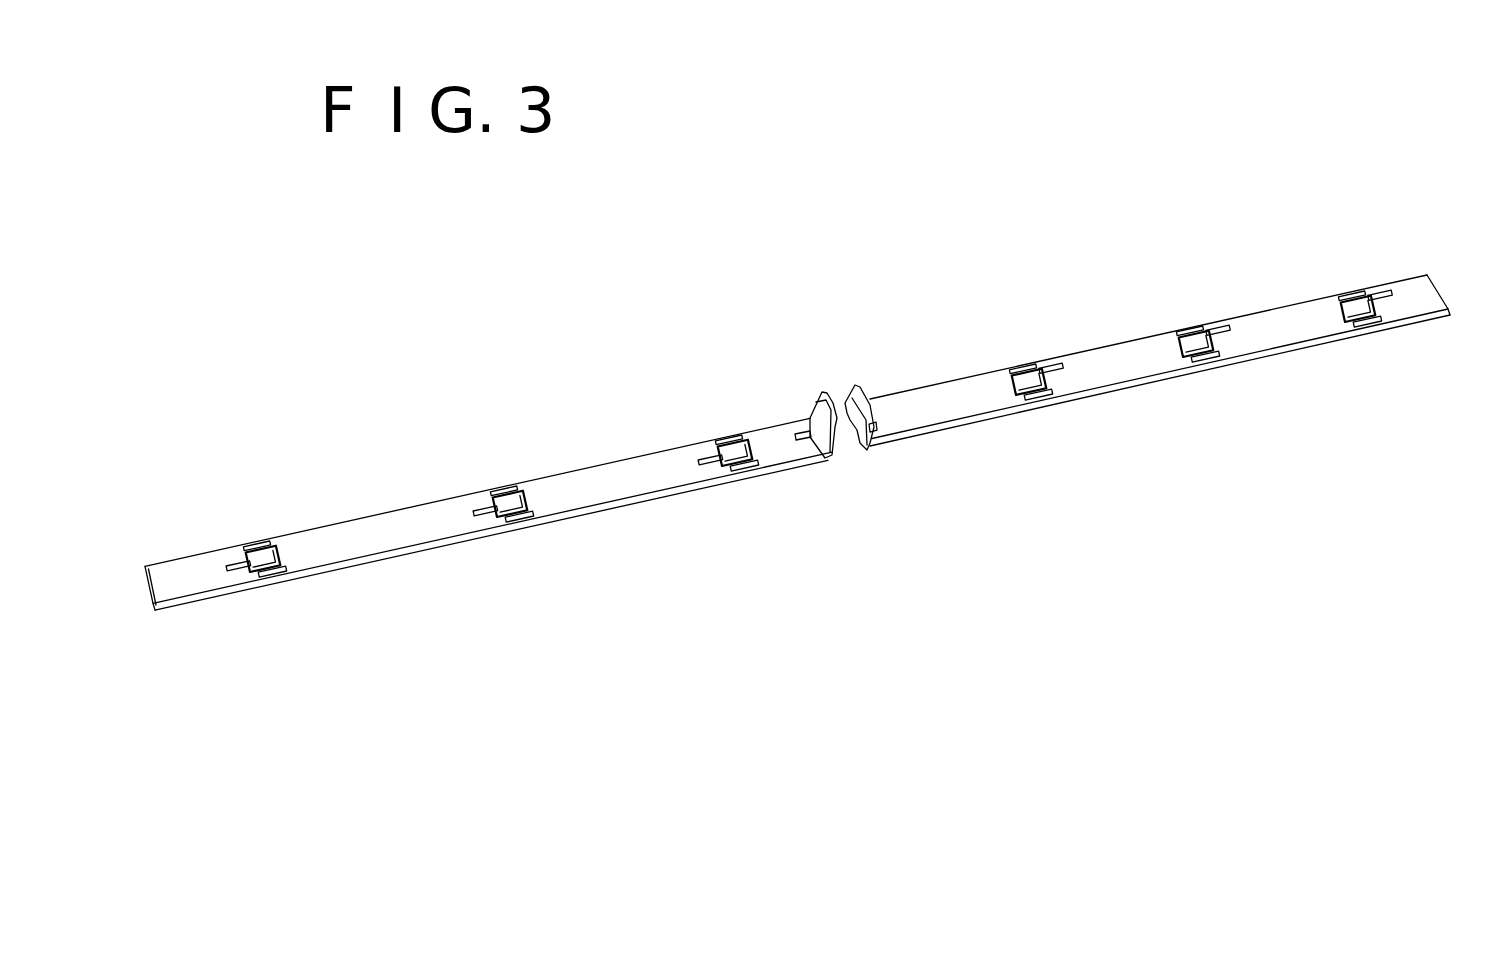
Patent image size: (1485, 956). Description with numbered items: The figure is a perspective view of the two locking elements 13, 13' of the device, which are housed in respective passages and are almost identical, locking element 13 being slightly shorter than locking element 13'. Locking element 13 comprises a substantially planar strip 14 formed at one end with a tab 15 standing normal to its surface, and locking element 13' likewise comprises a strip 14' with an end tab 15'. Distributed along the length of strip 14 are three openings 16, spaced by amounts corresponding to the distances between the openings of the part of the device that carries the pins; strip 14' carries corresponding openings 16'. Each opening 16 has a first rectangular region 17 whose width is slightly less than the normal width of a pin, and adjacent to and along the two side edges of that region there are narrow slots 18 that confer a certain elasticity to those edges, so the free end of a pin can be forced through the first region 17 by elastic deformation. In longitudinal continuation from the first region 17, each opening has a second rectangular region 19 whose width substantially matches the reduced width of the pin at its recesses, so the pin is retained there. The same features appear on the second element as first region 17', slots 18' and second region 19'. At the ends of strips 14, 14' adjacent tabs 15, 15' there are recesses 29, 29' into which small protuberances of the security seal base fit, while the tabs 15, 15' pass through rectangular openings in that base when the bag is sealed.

The locking element 13 is at (488, 499).
The strip 14 is at (488, 528).
The tab 15 is at (805, 385).
The opening 16 is at (260, 622).
The first rectangular region 17 is at (271, 503).
The narrow slot 18 is at (609, 488).
The second rectangular region 19 is at (210, 509).
The recess 29 is at (816, 506).
The locking element 13' is at (1177, 309).
The strip 14' is at (1177, 317).
The tab 15' is at (862, 361).
The opening 16' is at (1162, 419).
The first rectangular region 17' is at (1022, 335).
The narrow slot 18' is at (1200, 297).
The second rectangular region 19' is at (1364, 262).
The recess 29' is at (916, 375).